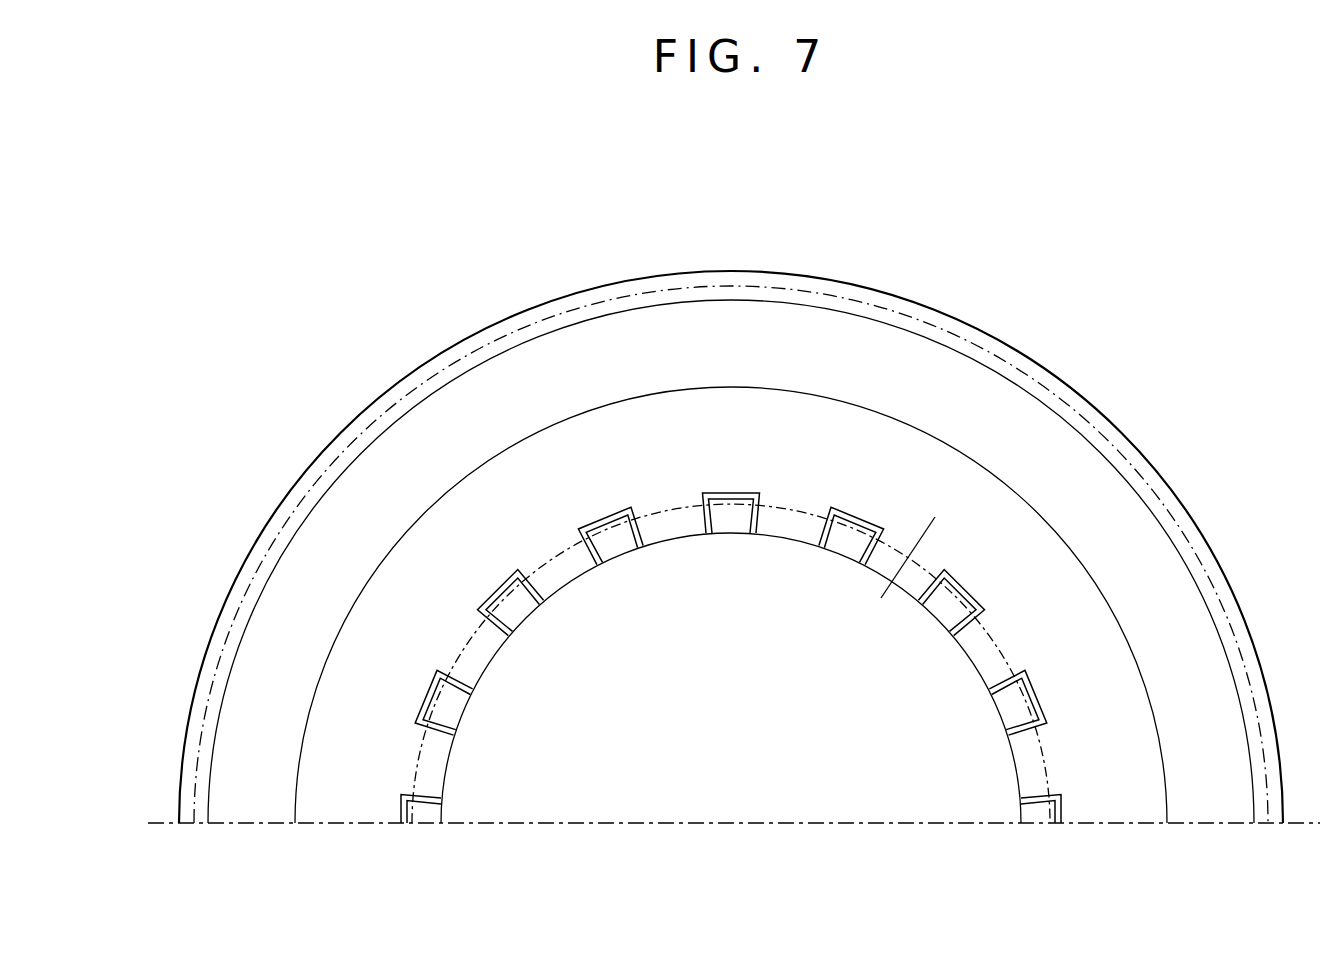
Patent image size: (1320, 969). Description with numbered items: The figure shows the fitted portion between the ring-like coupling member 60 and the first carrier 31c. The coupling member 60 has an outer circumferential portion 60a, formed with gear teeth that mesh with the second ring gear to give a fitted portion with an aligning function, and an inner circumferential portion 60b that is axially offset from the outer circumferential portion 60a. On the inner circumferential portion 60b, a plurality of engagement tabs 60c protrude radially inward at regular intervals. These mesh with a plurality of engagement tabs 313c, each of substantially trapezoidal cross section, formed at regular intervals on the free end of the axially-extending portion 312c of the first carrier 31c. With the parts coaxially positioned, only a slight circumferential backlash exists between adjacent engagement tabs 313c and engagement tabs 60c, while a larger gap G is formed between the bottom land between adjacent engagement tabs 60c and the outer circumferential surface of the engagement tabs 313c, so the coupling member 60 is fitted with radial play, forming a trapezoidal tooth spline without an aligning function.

The coupling member 60 is at (1095, 383).
The outer circumferential portion of the coupling member 60a is at (1210, 803).
The inner circumferential portion of the coupling member 60b is at (1108, 803).
The engagement tabs of the coupling member 60c is at (945, 607).
The first carrier 31c is at (817, 545).
The axially-extending portion of the first carrier 312c is at (426, 776).
The engagement tabs of the first carrier 313c is at (518, 607).
The gap G is at (906, 562).